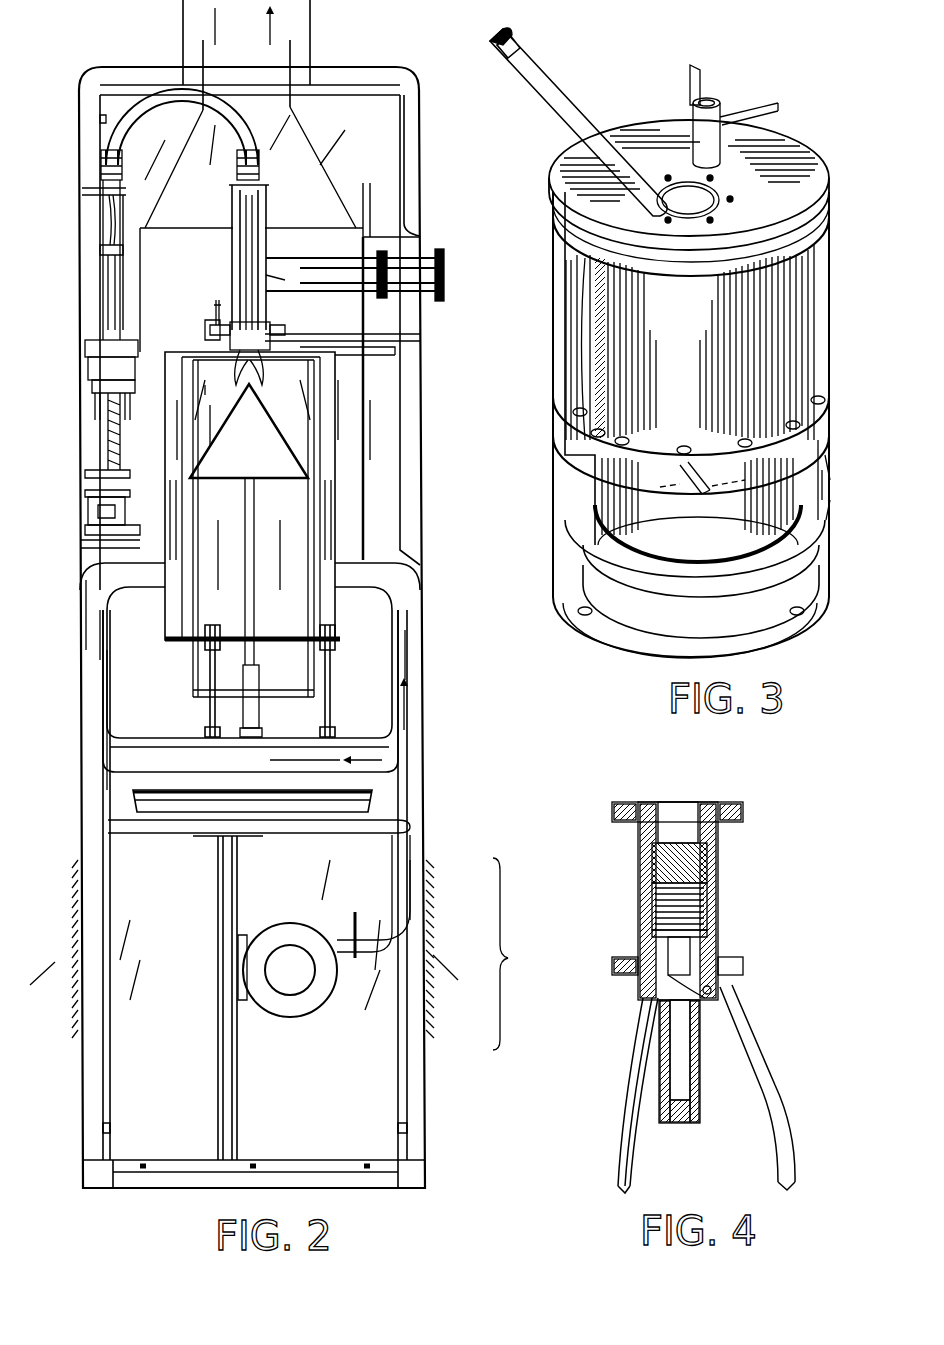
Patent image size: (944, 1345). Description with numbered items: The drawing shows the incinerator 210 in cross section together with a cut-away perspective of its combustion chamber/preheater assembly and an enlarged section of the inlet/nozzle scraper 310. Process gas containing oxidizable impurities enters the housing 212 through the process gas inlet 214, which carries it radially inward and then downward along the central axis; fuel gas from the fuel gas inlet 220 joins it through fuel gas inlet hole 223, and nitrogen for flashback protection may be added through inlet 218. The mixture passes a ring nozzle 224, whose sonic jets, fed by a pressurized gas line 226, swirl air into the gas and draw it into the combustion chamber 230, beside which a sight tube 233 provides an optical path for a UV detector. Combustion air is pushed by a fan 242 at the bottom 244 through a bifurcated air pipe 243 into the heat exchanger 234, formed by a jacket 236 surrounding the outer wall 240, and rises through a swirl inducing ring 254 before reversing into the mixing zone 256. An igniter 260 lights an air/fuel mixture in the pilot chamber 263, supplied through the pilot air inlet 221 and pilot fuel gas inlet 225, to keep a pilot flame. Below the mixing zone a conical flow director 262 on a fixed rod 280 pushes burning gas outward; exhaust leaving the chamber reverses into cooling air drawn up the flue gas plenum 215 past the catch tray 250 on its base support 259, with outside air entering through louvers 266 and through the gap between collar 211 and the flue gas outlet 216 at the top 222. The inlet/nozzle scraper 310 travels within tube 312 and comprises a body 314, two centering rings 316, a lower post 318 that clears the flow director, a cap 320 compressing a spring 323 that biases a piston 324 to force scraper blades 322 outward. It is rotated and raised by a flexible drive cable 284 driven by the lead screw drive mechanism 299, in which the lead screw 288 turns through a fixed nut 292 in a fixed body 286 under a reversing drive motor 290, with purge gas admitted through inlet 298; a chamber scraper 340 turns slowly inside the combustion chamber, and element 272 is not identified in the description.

In FIG. 2, the incinerator 210 is at (445, 702).
In FIG. 2, the collar 211 is at (183, 25).
In FIG. 2, the housing 212 is at (80, 135).
In FIG. 2, the process gas inlet 214 is at (440, 265).
In FIG. 2, the flue gas plenum 215 is at (107, 668).
In FIG. 2, the flue gas outlet 216 is at (190, 135).
In FIG. 2, the inlet 218 is at (395, 325).
In FIG. 2, the fuel gas inlet 220 is at (372, 185).
In FIG. 3, the pilot air inlet 221 is at (735, 100).
In FIG. 2, the top 222 is at (360, 67).
In FIG. 2, the fuel gas inlet hole 223 is at (302, 274).
In FIG. 2, the ring nozzle 224 is at (335, 355).
In FIG. 3, the pilot fuel gas inlet 225 is at (778, 107).
In FIG. 2, the pressurized gas line 226 is at (300, 345).
In FIG. 2, the combustion chamber 230 is at (305, 405).
In FIG. 3, the combustion chamber 230 is at (755, 342).
In FIG. 3, the sight tube 233 is at (553, 98).
In FIG. 2, the heat exchanger 234 is at (325, 438).
In FIG. 3, the heat exchanger 234 is at (812, 302).
In FIG. 2, the jacket 236 is at (380, 567).
In FIG. 3, the jacket 236 is at (820, 396).
In FIG. 2, the outer wall 240 is at (330, 395).
In FIG. 3, the outer wall 240 is at (805, 280).
In FIG. 2, the fan 242 is at (290, 1005).
In FIG. 2, the bifurcated air pipe 243 is at (90, 645).
In FIG. 2, the bottom 244 is at (165, 1190).
In FIG. 2, the catch tray 250 is at (150, 793).
In FIG. 2, the swirl inducing ring 254 is at (340, 520).
In FIG. 3, the swirl inducing ring 254 is at (805, 440).
In FIG. 2, the mixing zone 256 is at (214, 396).
In FIG. 2, the base support 259 is at (400, 826).
In FIG. 2, the igniter 260 is at (218, 300).
In FIG. 2, the flow director 262 is at (275, 466).
In FIG. 2, the pilot chamber 263 is at (205, 325).
In FIG. 3, the pilot chamber 263 is at (715, 138).
In FIG. 2, the louvers 266 is at (315, 954).
In FIG. 3, the cylinder wall 272 is at (553, 314).
In FIG. 2, the fixed rod 280 is at (252, 570).
In FIG. 2, the flexible drive cable 284 is at (244, 220).
In FIG. 2, the fixed body 286 is at (85, 347).
In FIG. 2, the lead screw 288 is at (95, 446).
In FIG. 2, the reversing drive motor 290 is at (100, 548).
In FIG. 2, the fixed nut 292 is at (95, 420).
In FIG. 2, the inlet 298 is at (88, 372).
In FIG. 2, the lead screw drive mechanism 299 is at (88, 512).
In FIG. 4, the inlet/nozzle scraper 310 is at (750, 793).
In FIG. 2, the tube 312 is at (232, 197).
In FIG. 4, the body 314 is at (718, 945).
In FIG. 2, the centering rings 316 is at (210, 340).
In FIG. 4, the centering rings 316 is at (625, 822).
In FIG. 4, the lower post 318 is at (660, 1090).
In FIG. 4, the cap 320 is at (690, 805).
In FIG. 4, the scraper blades 322 is at (760, 1060).
In FIG. 4, the spring 323 is at (705, 915).
In FIG. 4, the piston 324 is at (680, 975).
In FIG. 2, the chamber scraper 340 is at (250, 690).